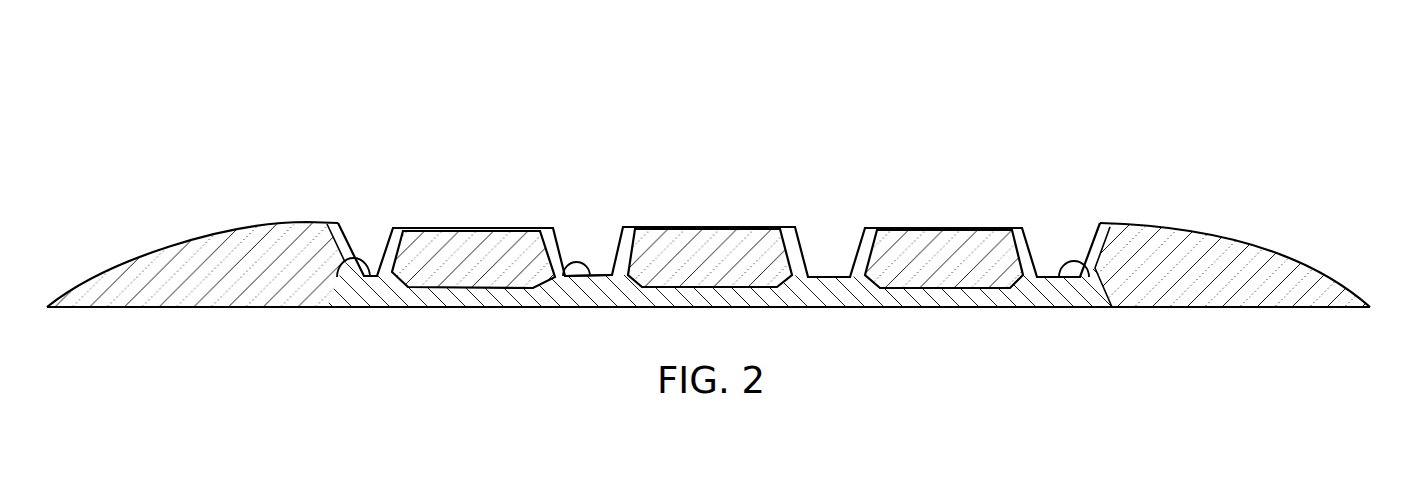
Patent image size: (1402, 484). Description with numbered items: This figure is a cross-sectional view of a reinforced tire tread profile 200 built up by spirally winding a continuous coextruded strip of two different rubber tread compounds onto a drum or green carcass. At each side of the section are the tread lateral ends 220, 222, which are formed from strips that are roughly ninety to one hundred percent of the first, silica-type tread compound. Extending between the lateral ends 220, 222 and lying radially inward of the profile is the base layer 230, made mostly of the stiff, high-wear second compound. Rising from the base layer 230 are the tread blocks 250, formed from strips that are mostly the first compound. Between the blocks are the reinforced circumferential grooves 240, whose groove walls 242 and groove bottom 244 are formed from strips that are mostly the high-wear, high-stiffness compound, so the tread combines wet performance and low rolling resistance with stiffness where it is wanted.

The reinforced tire tread profile 200 is at (287, 115).
The tread lateral end 220 is at (187, 247).
The tread lateral end 222 is at (1230, 247).
The base layer 230 is at (450, 303).
The reinforced circumferential groove 240 is at (360, 227).
The groove wall 242 is at (398, 230).
The groove bottom 244 is at (348, 258).
The tread block 250 is at (710, 235).